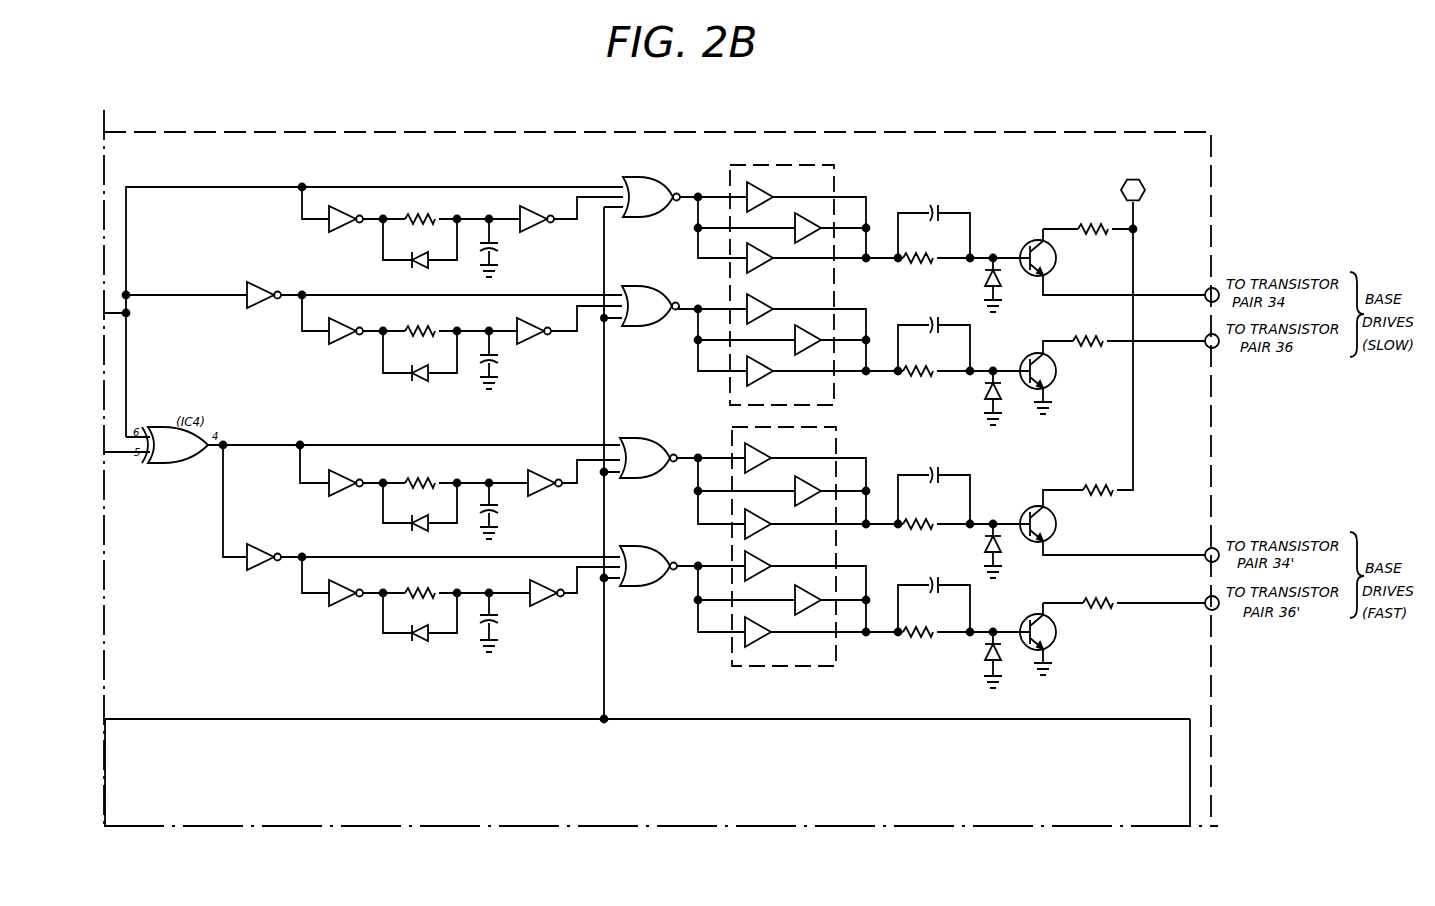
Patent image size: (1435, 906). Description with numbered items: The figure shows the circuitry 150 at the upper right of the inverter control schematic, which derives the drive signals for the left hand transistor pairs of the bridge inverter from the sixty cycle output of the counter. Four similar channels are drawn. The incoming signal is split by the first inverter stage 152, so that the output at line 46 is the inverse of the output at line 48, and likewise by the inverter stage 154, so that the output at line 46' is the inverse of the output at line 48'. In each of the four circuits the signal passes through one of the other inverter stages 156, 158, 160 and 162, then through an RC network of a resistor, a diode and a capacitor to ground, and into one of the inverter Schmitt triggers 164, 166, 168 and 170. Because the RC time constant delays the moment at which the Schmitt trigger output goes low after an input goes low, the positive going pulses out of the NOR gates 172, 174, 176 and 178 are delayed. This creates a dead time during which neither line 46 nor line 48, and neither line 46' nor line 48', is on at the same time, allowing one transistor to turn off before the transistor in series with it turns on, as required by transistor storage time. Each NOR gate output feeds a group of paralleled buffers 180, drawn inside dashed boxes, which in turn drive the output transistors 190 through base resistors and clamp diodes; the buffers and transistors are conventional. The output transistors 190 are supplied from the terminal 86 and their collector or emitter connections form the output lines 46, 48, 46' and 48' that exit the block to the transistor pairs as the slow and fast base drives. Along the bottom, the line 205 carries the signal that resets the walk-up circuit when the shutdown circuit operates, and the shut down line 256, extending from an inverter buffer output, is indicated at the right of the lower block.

The circuitry 150 is at (612, 164).
The first inverter stage 152 is at (259, 285).
The inverter stage 154 is at (263, 573).
The inverter stage 156 is at (336, 233).
The inverter stage 158 is at (337, 345).
The inverter stage 160 is at (336, 497).
The inverter stage 162 is at (336, 607).
The inverter Schmitt trigger 164 is at (533, 233).
The inverter Schmitt trigger 166 is at (531, 345).
The inverter Schmitt trigger 168 is at (538, 497).
The inverter Schmitt trigger 170 is at (545, 606).
The NOR gate 172 is at (650, 222).
The NOR gate 174 is at (645, 292).
The NOR gate 176 is at (636, 436).
The NOR gate 178 is at (643, 548).
The buffers 180 is at (795, 161).
The output transistors 190 is at (1044, 214).
The supply terminal 86 is at (1133, 190).
The line 46 is at (1131, 285).
The line 48 is at (1131, 331).
The line 46' is at (1131, 546).
The line 48' is at (1131, 593).
The line 205 is at (514, 717).
The shut down line 256 is at (1190, 757).